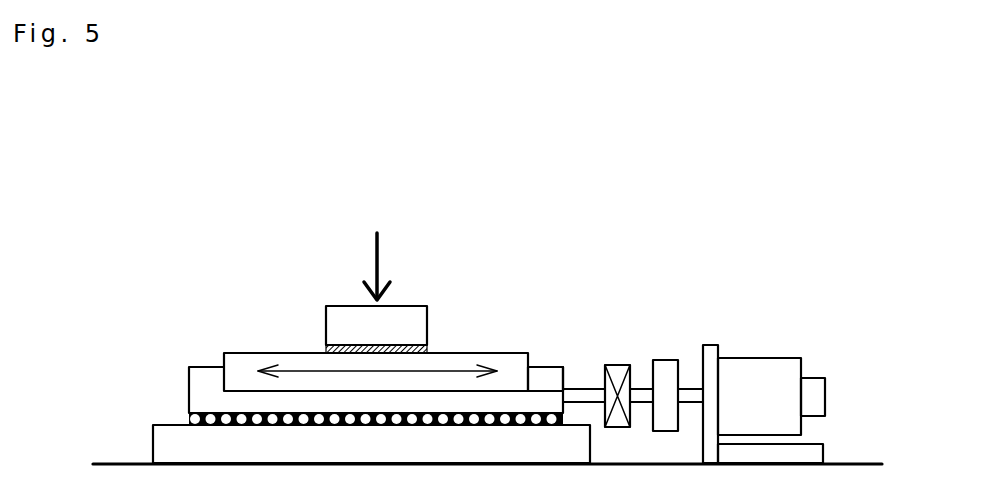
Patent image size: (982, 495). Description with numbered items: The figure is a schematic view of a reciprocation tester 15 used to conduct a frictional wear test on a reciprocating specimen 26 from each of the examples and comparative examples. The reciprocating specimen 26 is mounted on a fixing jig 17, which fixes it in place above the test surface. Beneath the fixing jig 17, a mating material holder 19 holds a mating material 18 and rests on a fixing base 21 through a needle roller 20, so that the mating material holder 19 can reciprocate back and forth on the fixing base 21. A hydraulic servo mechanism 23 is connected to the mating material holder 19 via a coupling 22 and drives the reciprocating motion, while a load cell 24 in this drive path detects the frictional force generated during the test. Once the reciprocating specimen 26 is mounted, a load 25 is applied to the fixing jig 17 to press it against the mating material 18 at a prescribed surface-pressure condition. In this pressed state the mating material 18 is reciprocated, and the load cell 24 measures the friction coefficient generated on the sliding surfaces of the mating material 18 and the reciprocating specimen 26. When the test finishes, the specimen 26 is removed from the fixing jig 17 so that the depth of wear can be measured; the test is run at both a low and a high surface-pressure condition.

The reciprocation tester 15 is at (263, 312).
The fixing jig 17 is at (413, 308).
The mating material 18 is at (505, 362).
The mating material holder 19 is at (540, 377).
The needle roller 20 is at (188, 417).
The fixing base 21 is at (170, 447).
The coupling 22 is at (613, 370).
The hydraulic servo mechanism 23 is at (767, 363).
The load cell 24 is at (668, 365).
The load 25 is at (373, 268).
The reciprocating specimen 26 is at (428, 352).